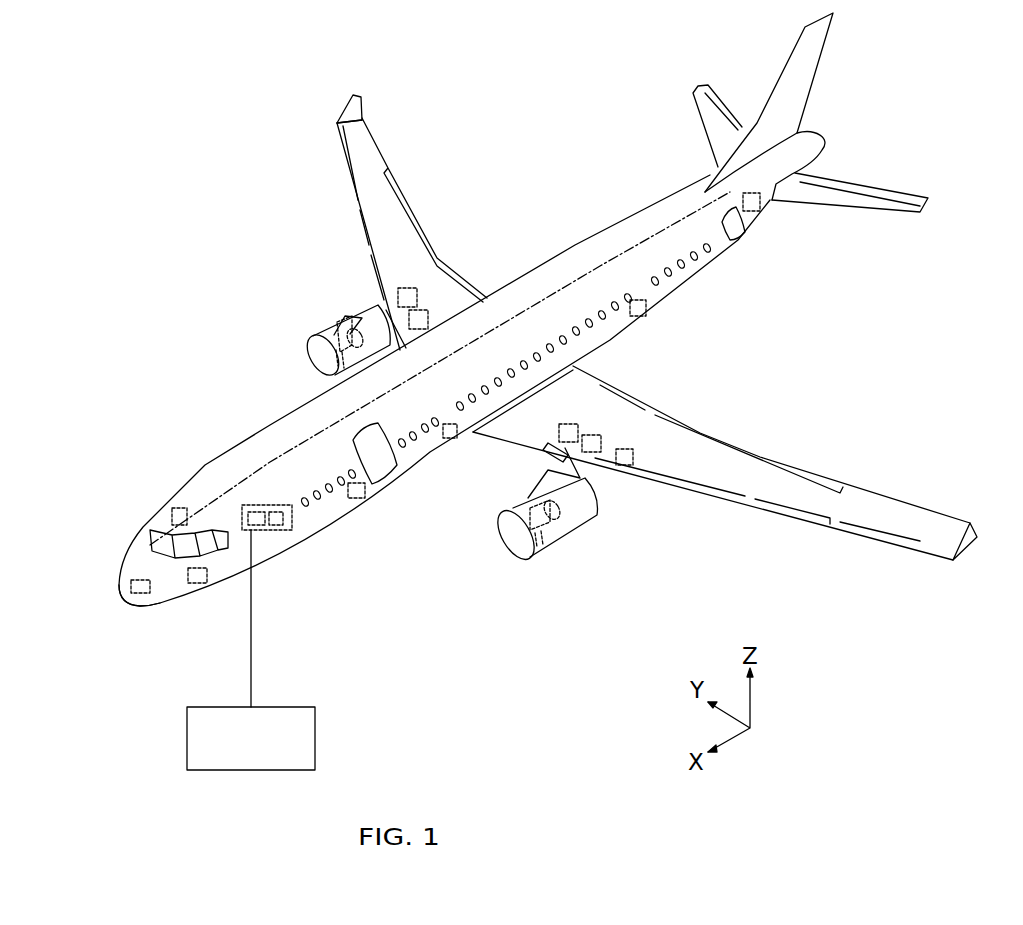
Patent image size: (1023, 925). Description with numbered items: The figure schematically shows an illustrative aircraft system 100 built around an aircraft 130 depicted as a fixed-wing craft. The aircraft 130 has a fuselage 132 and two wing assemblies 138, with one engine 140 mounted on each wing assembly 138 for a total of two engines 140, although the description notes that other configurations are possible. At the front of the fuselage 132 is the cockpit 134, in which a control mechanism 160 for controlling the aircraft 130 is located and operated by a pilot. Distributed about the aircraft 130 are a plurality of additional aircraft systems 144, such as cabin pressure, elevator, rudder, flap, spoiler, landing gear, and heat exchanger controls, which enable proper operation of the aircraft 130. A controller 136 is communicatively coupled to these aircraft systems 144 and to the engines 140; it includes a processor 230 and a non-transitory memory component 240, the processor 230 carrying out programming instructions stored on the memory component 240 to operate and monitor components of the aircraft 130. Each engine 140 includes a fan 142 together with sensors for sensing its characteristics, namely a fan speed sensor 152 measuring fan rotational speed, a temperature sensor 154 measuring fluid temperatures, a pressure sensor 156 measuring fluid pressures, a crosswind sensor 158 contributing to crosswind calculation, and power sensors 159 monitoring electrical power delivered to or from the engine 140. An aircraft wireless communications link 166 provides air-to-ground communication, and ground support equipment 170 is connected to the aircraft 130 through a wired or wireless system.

The aircraft system 100 is at (190, 178).
The aircraft 130 is at (118, 550).
The fuselage 132 is at (573, 243).
The cockpit 134 is at (153, 513).
The controller 136 is at (270, 502).
The wing assemblies 138 is at (363, 147).
The engines 140 is at (305, 368).
The fan 142 is at (307, 336).
The additional aircraft systems 144 is at (752, 212).
The fan speed sensor 152 is at (342, 320).
The temperature sensor 154 is at (425, 310).
The pressure sensor 156 is at (406, 288).
The crosswind sensor 158 is at (200, 584).
The power sensors 159 is at (636, 458).
The control mechanism 160 is at (180, 507).
The aircraft wireless communications link 166 is at (138, 596).
The ground support equipment 170 is at (215, 707).
The processor 230 is at (276, 618).
The non-transitory memory component 240 is at (291, 527).